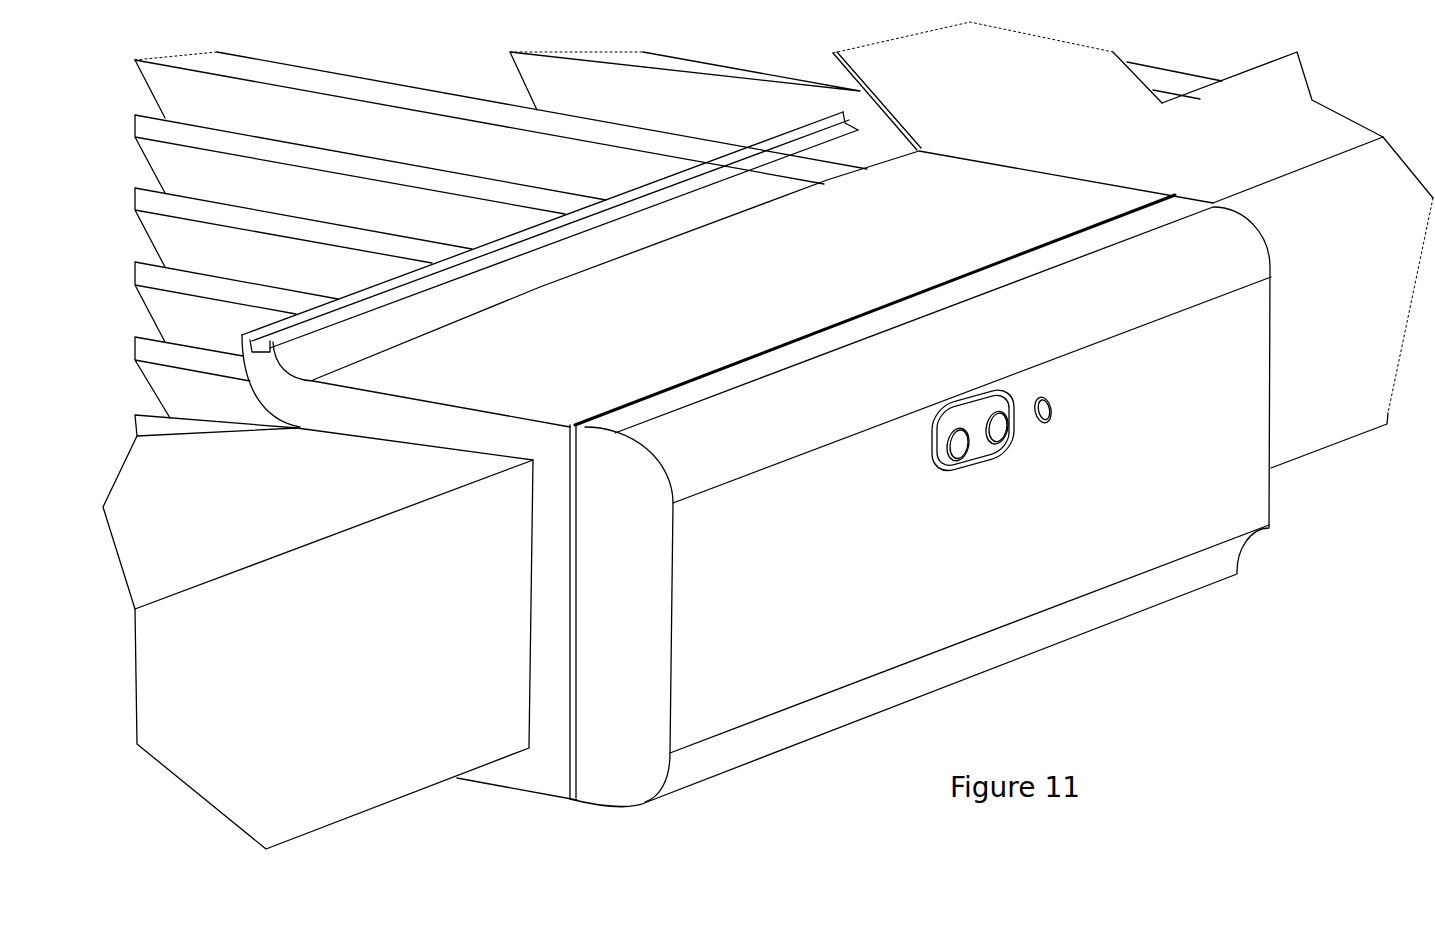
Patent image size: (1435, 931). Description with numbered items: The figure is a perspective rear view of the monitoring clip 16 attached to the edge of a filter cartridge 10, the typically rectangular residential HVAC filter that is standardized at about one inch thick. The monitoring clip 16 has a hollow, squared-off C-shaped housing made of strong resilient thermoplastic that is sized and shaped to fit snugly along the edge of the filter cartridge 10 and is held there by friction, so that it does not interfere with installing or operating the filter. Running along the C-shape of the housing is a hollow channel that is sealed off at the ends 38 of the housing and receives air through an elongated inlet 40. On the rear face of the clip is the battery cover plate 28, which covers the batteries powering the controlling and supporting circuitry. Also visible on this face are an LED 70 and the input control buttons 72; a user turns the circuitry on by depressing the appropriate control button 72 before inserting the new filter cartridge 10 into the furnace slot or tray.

The filter cartridge 10 is at (236, 530).
The monitoring clip 16 is at (746, 459).
The battery cover plate 28 is at (1232, 495).
The ends of housing 38 is at (273, 368).
The elongated inlet 40 is at (673, 175).
The LED 70 is at (1046, 424).
The input control buttons 72 is at (972, 460).